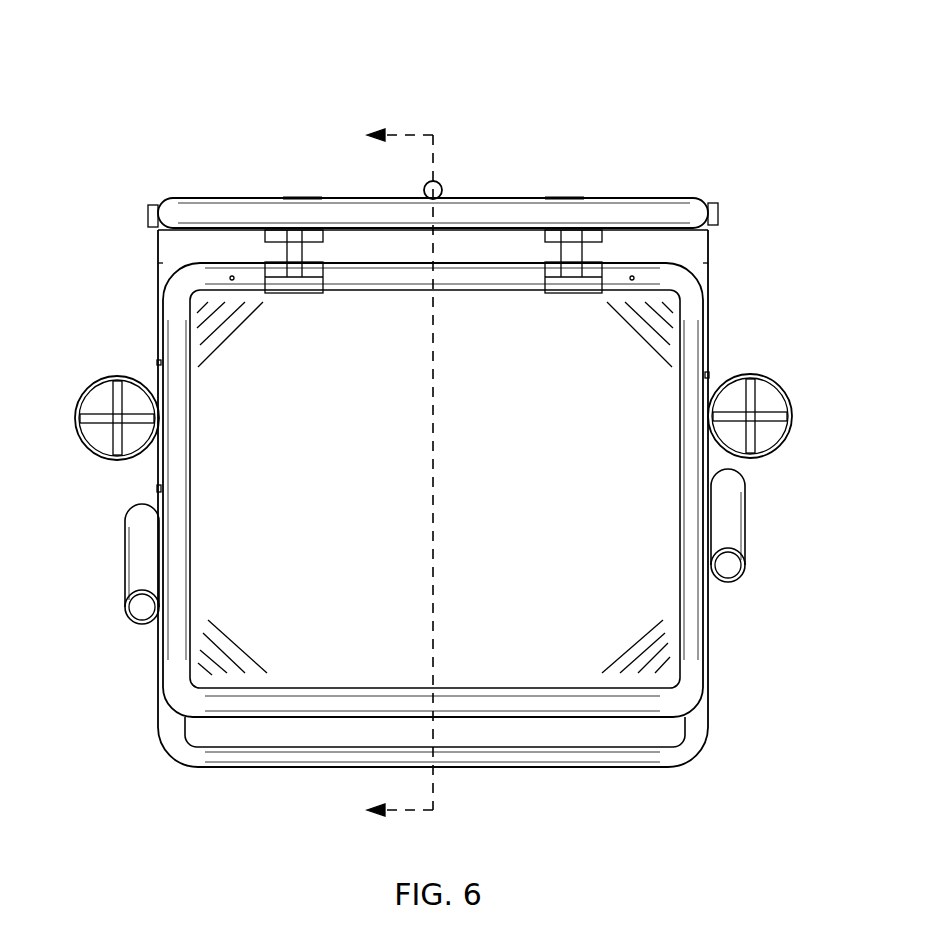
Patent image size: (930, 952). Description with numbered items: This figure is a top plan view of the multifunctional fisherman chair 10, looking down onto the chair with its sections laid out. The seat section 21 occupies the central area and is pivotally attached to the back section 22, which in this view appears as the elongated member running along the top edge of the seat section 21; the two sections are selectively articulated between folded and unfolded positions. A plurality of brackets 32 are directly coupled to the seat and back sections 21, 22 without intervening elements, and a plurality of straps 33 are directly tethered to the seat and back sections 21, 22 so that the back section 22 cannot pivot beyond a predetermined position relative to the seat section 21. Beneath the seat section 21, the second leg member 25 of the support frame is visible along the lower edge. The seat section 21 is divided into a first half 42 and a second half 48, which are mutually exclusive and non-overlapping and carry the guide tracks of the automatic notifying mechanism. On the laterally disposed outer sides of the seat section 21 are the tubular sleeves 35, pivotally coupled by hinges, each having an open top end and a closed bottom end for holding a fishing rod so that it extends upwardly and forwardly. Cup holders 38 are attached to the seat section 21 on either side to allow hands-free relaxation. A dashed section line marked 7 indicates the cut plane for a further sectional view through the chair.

The multifunctional fisherman chair 10 is at (112, 115).
The second half of the seat section 48 is at (746, 248).
The seat section 21 is at (658, 643).
The second leg member 25 is at (435, 807).
The back section 22 is at (433, 147).
The brackets 32 is at (296, 257).
The straps 33 is at (157, 263).
The first half of the seat section 42 is at (439, 387).
The cup holders 38 is at (92, 457).
The tubular sleeves 35 is at (433, 586).
The section line 7- 7 is at (390, 473).